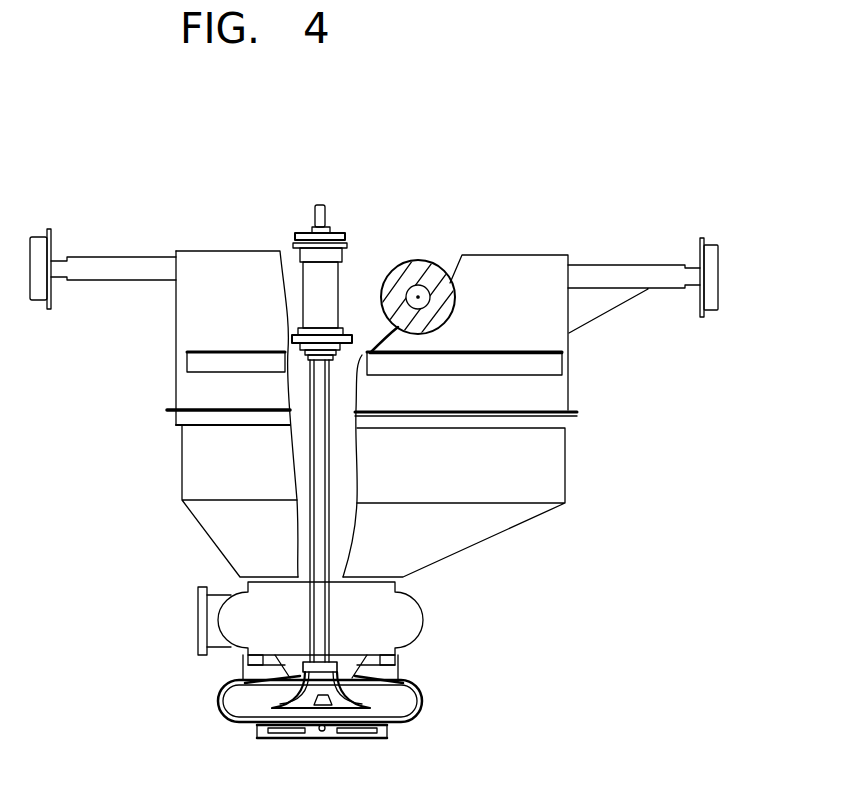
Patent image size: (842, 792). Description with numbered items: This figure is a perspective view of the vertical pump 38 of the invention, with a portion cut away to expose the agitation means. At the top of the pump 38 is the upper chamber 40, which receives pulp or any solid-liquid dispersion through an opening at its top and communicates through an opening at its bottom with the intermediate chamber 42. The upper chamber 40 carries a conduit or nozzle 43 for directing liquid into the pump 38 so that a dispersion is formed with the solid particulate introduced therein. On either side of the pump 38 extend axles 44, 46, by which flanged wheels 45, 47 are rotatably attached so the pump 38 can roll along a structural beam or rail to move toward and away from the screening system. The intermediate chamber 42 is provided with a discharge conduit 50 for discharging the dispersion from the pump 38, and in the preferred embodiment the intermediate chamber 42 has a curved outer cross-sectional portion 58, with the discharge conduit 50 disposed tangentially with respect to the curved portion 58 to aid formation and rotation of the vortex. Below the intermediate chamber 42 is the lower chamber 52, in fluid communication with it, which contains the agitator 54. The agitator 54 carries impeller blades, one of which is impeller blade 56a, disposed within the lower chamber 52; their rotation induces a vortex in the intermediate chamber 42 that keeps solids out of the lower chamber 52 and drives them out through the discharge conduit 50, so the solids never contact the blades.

The pump 38 is at (457, 230).
The upper chamber 40 is at (474, 476).
The intermediate chamber 42 is at (382, 624).
The conduit or nozzle 43 is at (418, 285).
The axle 44 is at (102, 256).
The flanged wheel 45 is at (47, 233).
The axle (second conduit) 46 is at (637, 265).
The flanged wheel 47 is at (704, 240).
The discharge conduit 50 is at (201, 656).
The lower chamber 52 is at (367, 697).
The agitator 54 is at (310, 615).
The impeller blade 56a is at (257, 740).
The curved outer cross-sectional portion 58 is at (218, 706).